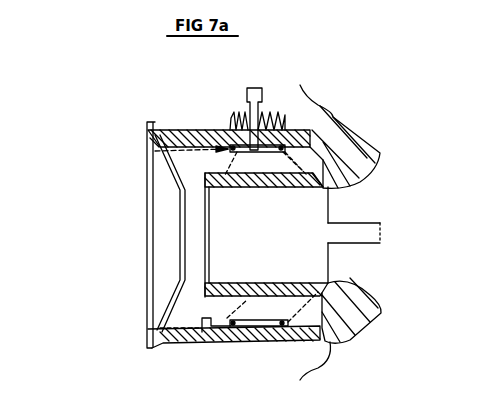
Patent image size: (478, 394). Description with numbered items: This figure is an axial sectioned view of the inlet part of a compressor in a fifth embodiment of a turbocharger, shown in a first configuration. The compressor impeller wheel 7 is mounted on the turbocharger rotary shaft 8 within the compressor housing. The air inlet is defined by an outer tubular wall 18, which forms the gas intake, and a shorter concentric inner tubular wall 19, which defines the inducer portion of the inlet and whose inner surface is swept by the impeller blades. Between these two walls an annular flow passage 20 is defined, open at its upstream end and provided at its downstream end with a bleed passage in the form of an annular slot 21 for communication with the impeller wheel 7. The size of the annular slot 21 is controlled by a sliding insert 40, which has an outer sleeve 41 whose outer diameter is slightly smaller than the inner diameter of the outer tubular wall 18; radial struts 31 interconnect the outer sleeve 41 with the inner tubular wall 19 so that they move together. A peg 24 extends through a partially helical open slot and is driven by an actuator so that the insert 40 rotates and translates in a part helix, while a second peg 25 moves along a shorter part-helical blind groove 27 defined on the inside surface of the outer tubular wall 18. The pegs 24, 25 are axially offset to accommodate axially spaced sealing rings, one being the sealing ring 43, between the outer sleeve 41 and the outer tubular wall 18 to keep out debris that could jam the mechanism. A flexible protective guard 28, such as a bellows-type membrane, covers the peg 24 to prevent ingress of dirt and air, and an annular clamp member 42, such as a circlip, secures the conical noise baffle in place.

The compressor impeller wheel 7 is at (378, 200).
The turbocharger rotary shaft 8 is at (372, 234).
The outer tubular wall 18 is at (147, 133).
The inner tubular wall 19 is at (266, 235).
The annular flow passage 20 is at (202, 170).
The annular slot 21 is at (325, 182).
The peg 24 is at (248, 93).
The peg 25 is at (208, 333).
The helical groove 27 is at (183, 333).
The protective guard 28 is at (223, 118).
The radial struts 31 is at (283, 165).
The insert 40 is at (155, 151).
The outer sleeve 41 is at (255, 323).
The annular clamp member 42 is at (228, 146).
The sealing ring 43 is at (281, 146).